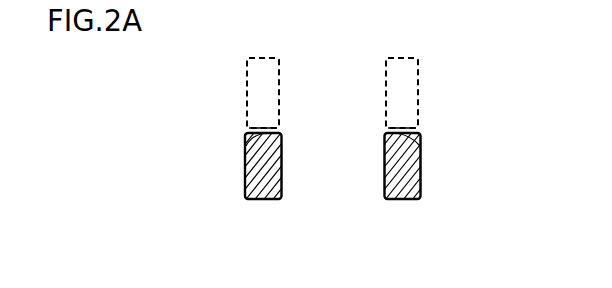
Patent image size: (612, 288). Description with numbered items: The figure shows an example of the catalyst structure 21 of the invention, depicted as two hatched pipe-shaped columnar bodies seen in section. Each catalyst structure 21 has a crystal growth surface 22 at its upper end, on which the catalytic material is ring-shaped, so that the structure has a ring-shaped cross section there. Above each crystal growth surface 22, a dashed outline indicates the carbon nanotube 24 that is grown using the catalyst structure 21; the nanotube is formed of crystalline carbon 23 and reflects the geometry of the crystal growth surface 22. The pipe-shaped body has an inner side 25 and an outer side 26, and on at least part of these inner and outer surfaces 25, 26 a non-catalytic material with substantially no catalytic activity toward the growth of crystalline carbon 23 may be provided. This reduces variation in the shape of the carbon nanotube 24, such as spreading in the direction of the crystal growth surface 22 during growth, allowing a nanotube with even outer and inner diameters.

The catalyst structure 21 is at (263, 199).
The crystal growth surface 22 is at (258, 140).
The crystalline carbon 23 is at (259, 128).
The carbon nanotube 24 is at (247, 77).
The inner side 25 is at (282, 152).
The outer side 26 is at (245, 177).